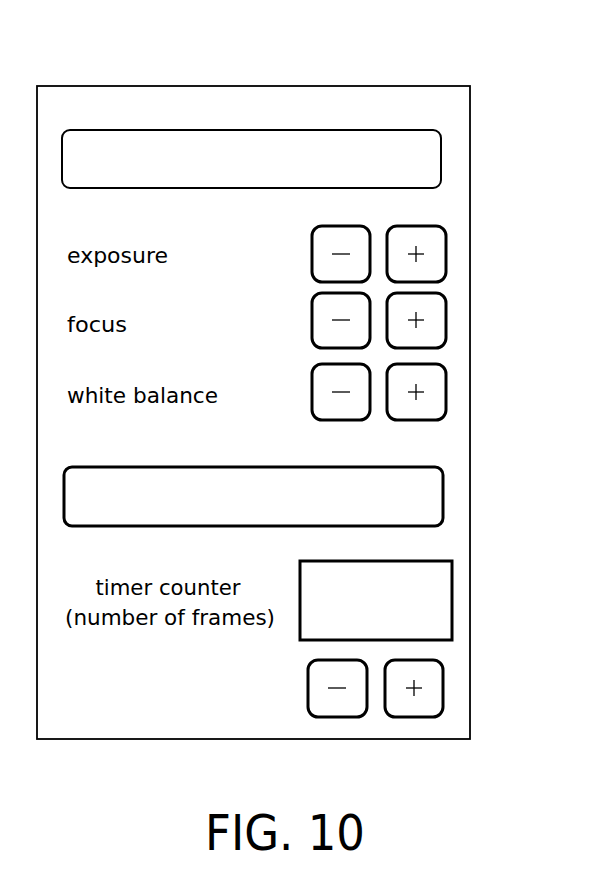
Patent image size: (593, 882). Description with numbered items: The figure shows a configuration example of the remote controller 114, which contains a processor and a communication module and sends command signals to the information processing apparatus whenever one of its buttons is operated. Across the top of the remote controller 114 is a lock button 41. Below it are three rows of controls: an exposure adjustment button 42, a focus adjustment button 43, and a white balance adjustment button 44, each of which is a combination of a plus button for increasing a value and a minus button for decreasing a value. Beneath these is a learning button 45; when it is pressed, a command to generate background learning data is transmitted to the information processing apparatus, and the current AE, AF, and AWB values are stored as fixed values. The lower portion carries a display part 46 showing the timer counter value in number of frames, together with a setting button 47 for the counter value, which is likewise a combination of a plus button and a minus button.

The remote controller 114 is at (370, 88).
The lock button 41 is at (442, 163).
The exposure adjustment button 42 is at (458, 258).
The focus adjustment button 43 is at (463, 327).
The white balance adjustment button 44 is at (453, 402).
The learning button 45 is at (440, 490).
The display part 46 is at (455, 595).
The setting button 47 is at (455, 688).